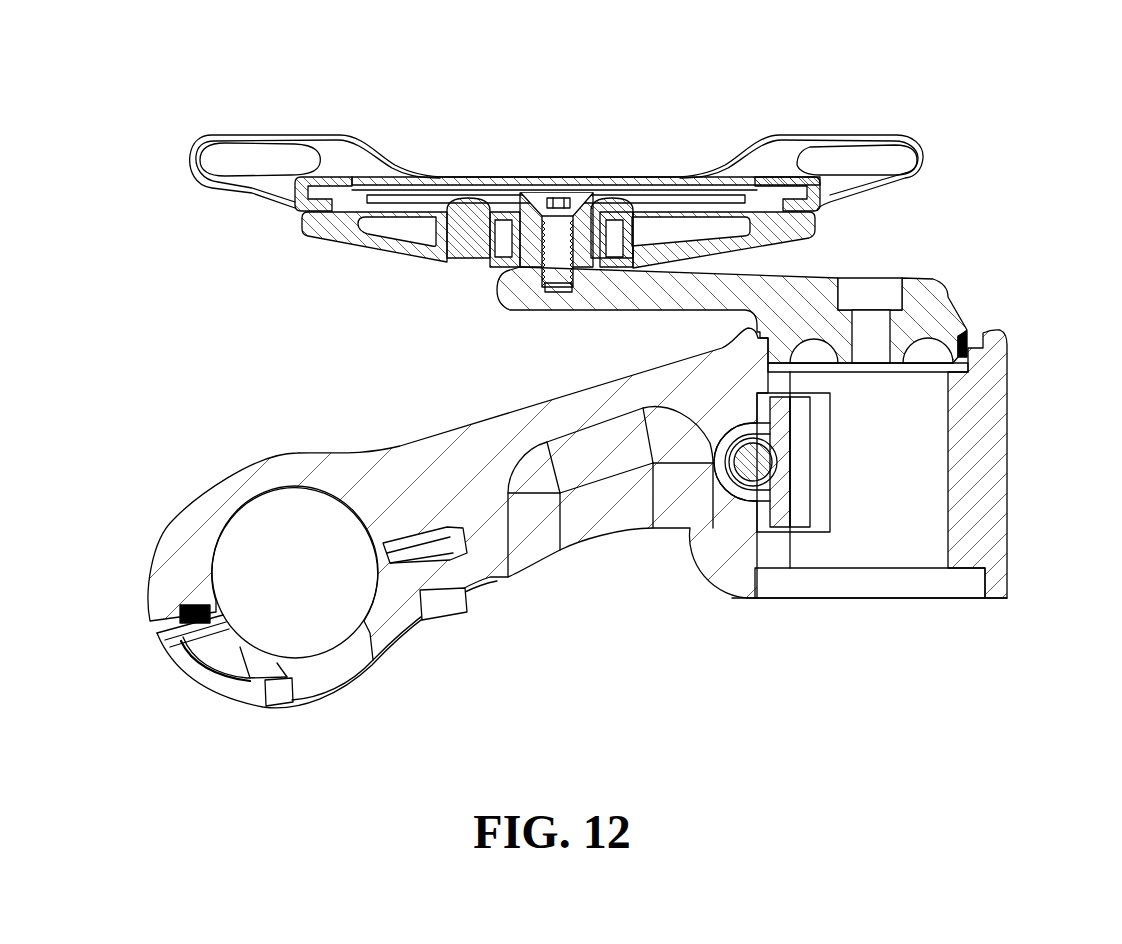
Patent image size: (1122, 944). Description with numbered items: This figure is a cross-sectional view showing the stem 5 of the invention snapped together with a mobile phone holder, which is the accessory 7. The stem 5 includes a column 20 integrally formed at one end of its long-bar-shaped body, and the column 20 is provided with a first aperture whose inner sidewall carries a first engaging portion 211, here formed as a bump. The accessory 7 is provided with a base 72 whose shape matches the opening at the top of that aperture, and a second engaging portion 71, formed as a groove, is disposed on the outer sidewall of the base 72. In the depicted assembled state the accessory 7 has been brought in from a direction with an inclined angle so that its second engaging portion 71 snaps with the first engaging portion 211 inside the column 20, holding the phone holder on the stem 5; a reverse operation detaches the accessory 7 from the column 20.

The accessory 7 is at (482, 140).
The base 72 is at (917, 303).
The second engaging portion 71 is at (970, 325).
The first engaging portion 211 is at (968, 366).
The column 20 is at (987, 478).
The stem 5 is at (602, 586).